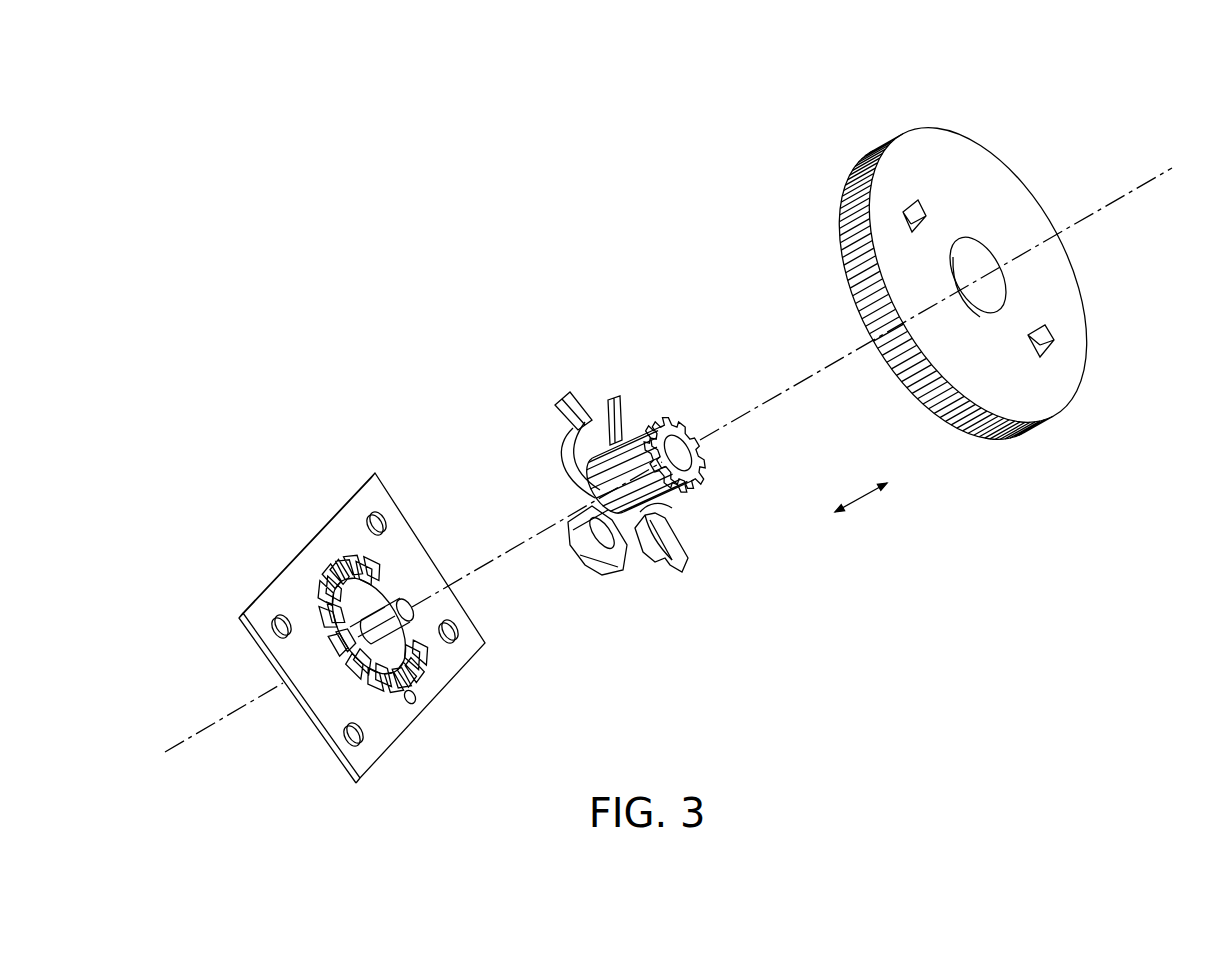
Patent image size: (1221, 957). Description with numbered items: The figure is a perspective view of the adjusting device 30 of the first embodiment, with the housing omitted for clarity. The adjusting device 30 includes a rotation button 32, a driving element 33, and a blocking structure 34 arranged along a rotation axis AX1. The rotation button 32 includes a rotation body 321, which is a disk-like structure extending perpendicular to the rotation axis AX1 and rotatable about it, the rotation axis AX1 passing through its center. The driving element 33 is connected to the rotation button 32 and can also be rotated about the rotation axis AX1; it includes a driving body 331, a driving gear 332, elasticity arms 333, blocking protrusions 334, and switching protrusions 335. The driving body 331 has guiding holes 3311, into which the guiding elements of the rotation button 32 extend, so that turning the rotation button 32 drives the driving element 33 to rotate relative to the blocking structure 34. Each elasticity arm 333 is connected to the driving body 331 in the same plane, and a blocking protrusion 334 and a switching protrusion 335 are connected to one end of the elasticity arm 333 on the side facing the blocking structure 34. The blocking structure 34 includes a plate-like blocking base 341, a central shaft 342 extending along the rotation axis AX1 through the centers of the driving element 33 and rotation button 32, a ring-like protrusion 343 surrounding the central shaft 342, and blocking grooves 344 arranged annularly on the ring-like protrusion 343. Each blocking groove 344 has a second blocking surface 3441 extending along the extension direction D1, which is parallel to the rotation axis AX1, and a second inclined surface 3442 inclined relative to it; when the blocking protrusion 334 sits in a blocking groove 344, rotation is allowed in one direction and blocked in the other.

The adjusting device 30 is at (1185, 82).
The rotation button 32 is at (967, 271).
The rotation body 321 is at (968, 163).
The rotation axis AX1 is at (1150, 178).
The driving element 33 is at (610, 471).
The driving body 331 is at (617, 393).
The driving gear 332 is at (680, 413).
The elasticity arm 333 is at (570, 450).
The blocking protrusion 334 is at (642, 540).
The switching protrusion 335 is at (560, 400).
The guiding hole 3311 is at (595, 545).
The blocking structure 34 is at (327, 640).
The blocking base 341 is at (355, 515).
The central shaft 342 is at (413, 633).
The ring-like protrusion 343 is at (370, 700).
The blocking groove 344 is at (279, 696).
The second blocking surface 3441 is at (333, 633).
The second inclined surface 3442 is at (338, 657).
The extension direction D1 is at (864, 510).